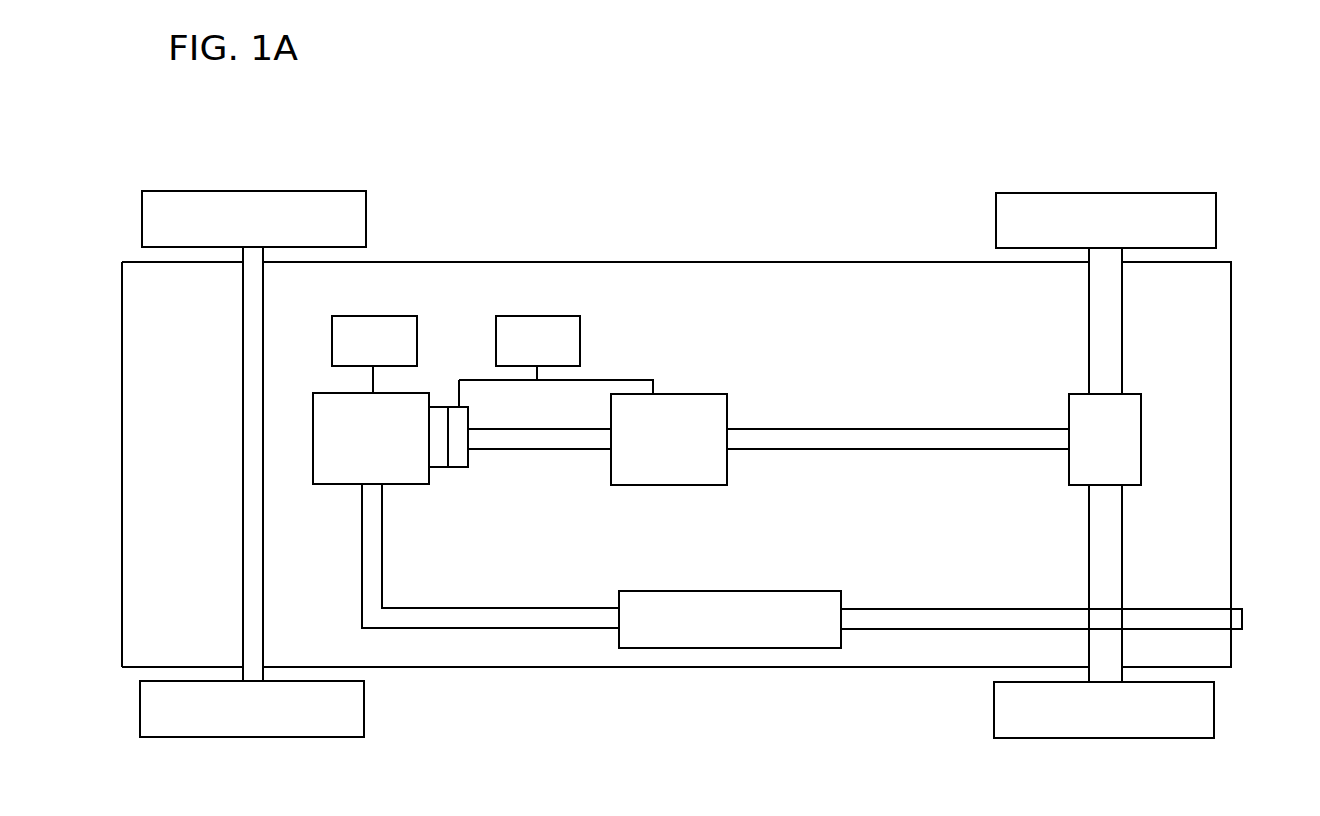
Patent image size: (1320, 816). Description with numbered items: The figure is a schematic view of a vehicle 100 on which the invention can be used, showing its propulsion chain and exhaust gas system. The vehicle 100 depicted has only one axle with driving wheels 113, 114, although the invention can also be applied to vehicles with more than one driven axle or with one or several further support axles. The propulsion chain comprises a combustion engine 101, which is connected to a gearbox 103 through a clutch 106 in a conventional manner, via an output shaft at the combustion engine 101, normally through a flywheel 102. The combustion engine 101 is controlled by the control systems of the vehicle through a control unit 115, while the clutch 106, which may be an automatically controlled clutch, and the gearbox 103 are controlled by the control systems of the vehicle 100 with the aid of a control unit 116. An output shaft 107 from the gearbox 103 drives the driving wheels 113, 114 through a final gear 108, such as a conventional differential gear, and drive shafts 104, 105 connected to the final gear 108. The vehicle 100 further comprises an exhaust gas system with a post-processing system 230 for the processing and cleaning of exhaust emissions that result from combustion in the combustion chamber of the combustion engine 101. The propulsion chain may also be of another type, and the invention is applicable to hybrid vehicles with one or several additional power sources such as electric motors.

The vehicle 100 is at (582, 100).
The combustion engine 101 is at (345, 474).
The flywheel 102 is at (446, 469).
The gearbox 103 is at (672, 405).
The drive shaft 104 is at (1110, 320).
The drive shaft 105 is at (1115, 592).
The clutch 106 is at (458, 469).
The output shaft 107 is at (990, 444).
The final gear 108 is at (1136, 434).
The driving wheel 113 is at (1210, 211).
The driving wheel 114 is at (1209, 713).
The control unit 115 is at (374, 350).
The control unit 116 is at (558, 350).
The post-processing system 230 is at (717, 602).